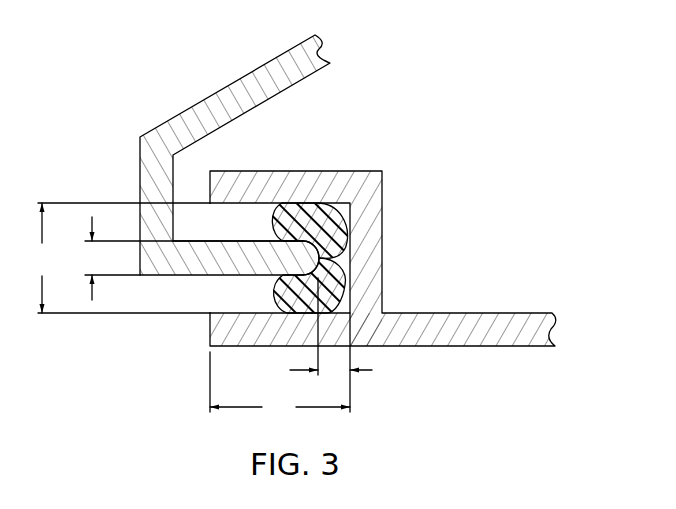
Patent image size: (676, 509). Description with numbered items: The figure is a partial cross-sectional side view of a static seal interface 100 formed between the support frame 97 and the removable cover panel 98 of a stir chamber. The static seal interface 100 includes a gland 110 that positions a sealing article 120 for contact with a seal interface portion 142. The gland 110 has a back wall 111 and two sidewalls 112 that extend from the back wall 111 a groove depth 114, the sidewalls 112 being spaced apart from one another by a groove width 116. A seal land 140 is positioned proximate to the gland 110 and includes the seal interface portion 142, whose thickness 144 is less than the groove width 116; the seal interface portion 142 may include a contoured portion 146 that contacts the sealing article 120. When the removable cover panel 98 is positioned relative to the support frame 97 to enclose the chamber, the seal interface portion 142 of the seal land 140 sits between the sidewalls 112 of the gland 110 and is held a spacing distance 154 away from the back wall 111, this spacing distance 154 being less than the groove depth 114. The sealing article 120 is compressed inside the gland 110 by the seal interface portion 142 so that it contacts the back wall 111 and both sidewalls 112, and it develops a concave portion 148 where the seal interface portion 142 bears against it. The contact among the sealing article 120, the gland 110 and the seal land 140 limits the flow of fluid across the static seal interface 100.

The support frame 97 is at (383, 255).
The removable cover panel 98 is at (215, 185).
The static seal interface 100 is at (292, 217).
The gland 110 is at (300, 171).
The back wall 111 is at (347, 305).
The sidewalls 112 is at (240, 200).
The groove depth 114 is at (280, 366).
The groove width 116 is at (119, 258).
The sealing article 120 is at (297, 313).
The seal land 140 is at (138, 288).
The seal interface portion 142 is at (305, 262).
The thickness 144 is at (124, 258).
The contoured portion 146 is at (350, 237).
The concave portion 148 is at (310, 237).
The spacing distance 154 is at (332, 372).